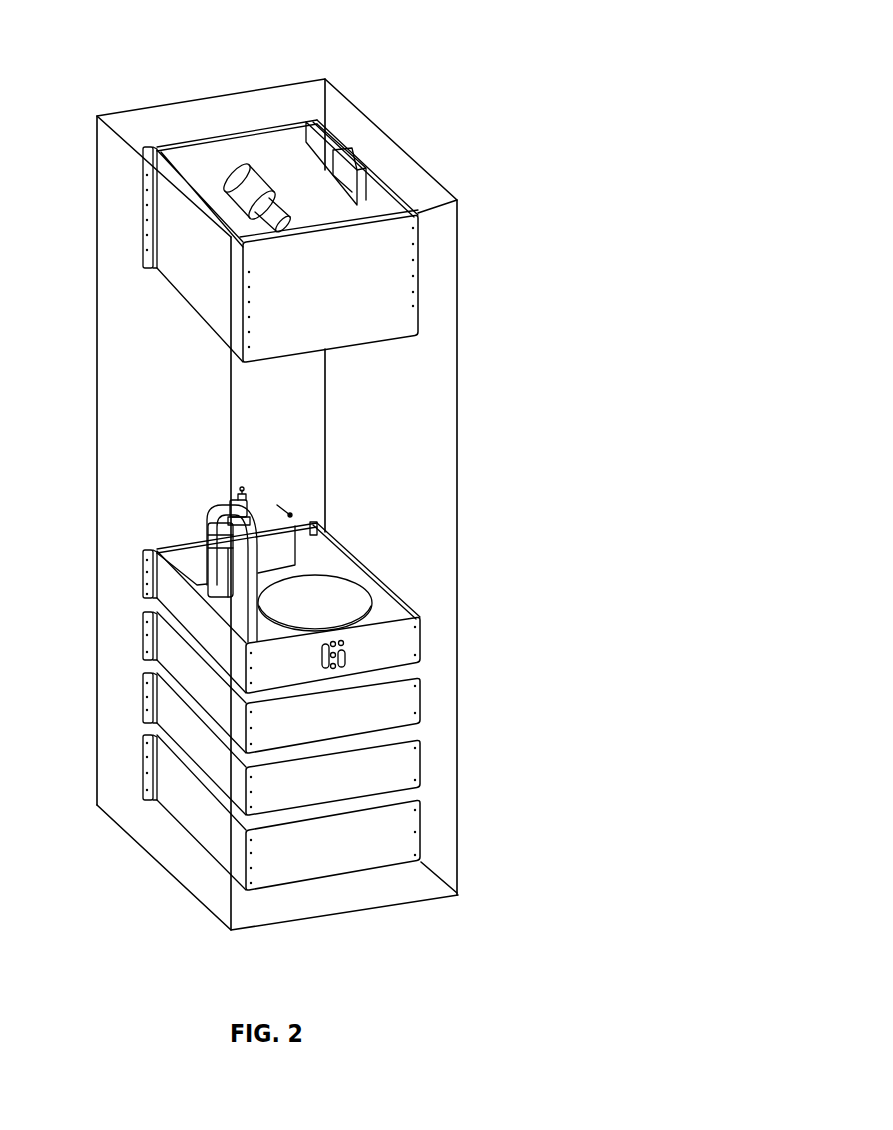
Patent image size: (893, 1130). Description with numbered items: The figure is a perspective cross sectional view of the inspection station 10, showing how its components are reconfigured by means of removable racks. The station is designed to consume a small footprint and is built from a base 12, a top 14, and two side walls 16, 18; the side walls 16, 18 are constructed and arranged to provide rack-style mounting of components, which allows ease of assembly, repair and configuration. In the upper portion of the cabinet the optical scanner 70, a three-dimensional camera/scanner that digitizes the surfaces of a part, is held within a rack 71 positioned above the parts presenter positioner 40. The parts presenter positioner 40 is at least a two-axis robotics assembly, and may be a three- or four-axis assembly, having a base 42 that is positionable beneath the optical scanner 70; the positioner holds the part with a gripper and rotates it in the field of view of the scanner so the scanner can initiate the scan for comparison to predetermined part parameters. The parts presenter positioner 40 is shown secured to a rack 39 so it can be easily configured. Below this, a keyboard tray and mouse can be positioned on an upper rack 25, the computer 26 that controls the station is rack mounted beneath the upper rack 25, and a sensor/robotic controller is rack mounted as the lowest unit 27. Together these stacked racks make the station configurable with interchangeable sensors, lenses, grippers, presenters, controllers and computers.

The inspection station 10 is at (349, 474).
The base 12 is at (400, 907).
The top 14 is at (298, 78).
The side wall 16 is at (138, 447).
The side wall 18 is at (412, 395).
The upper rack 25 is at (415, 702).
The computer 26 is at (415, 765).
The sensor/robotic controller 27 is at (415, 837).
The rack 39 is at (415, 642).
The parts presenter positioner 40 is at (330, 547).
The base 42 is at (355, 596).
The optical scanner 70 is at (268, 182).
The rack 71 is at (417, 285).